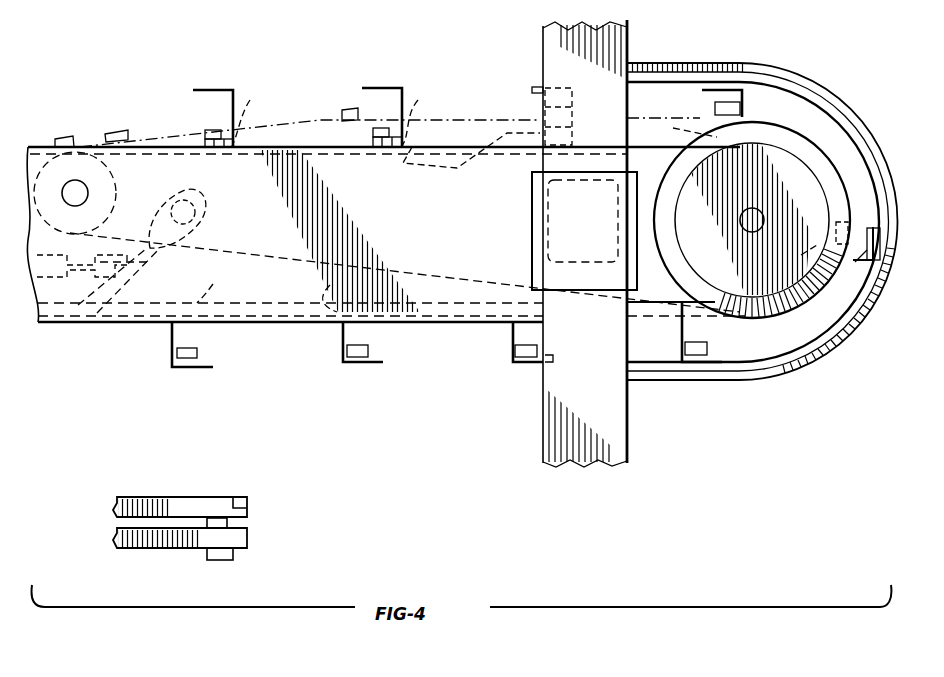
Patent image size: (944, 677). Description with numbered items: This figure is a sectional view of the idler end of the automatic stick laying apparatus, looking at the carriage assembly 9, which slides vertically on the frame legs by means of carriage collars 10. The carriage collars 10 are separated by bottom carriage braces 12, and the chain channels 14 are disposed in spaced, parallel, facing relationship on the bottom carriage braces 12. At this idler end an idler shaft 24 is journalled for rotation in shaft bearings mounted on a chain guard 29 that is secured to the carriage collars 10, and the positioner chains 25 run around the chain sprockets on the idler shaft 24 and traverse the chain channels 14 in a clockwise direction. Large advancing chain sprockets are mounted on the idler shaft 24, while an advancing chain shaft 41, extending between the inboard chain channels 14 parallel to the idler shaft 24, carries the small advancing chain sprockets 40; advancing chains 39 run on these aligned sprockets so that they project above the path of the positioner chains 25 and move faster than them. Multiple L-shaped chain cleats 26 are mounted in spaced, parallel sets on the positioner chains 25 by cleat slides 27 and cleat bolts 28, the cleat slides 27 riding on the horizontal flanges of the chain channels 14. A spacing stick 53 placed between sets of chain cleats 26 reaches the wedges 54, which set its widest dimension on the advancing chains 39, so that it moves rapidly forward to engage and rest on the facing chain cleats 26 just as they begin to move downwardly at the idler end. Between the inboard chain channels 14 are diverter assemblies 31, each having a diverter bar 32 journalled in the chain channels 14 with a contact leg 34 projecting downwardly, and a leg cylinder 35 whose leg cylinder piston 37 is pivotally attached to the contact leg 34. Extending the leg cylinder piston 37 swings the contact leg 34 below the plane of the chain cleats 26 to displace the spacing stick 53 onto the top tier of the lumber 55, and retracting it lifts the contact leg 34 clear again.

The carriage assembly 9 is at (638, 56).
The carriage collar 10 is at (548, 55).
The bottom carriage brace 12 is at (532, 215).
The chain channel 14 is at (448, 234).
The idler shaft 24 is at (752, 208).
The positioner chain 25 is at (300, 160).
The chain cleat 26 is at (373, 87).
The cleat slide 27 is at (213, 148).
The cleat bolt 28 is at (507, 203).
The chain guard 29 is at (770, 52).
The diverter assembly 31 is at (215, 178).
The diverter bar 32 is at (200, 203).
The contact leg 34 is at (160, 280).
The leg cylinder 35 is at (55, 283).
The leg cylinder piston 37 is at (160, 218).
The advancing chain 39 is at (510, 119).
The small advancing chain sprocket 40 is at (118, 186).
The advancing chain shaft 41 is at (66, 182).
The spacing stick 53 is at (122, 132).
The wedge 54 is at (66, 137).
The lumber 55 is at (200, 505).